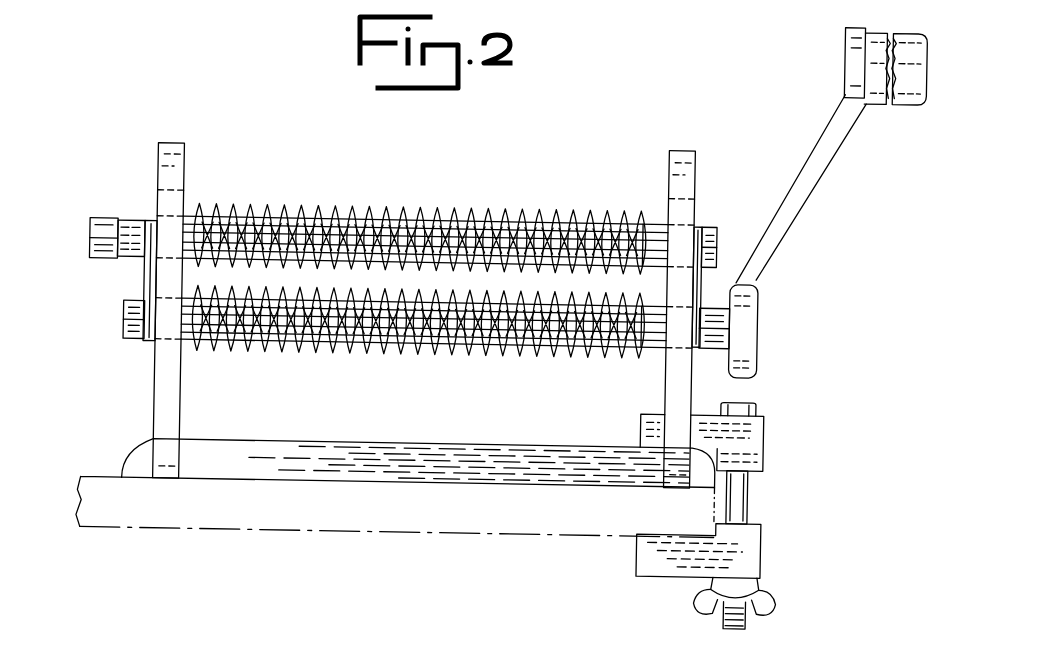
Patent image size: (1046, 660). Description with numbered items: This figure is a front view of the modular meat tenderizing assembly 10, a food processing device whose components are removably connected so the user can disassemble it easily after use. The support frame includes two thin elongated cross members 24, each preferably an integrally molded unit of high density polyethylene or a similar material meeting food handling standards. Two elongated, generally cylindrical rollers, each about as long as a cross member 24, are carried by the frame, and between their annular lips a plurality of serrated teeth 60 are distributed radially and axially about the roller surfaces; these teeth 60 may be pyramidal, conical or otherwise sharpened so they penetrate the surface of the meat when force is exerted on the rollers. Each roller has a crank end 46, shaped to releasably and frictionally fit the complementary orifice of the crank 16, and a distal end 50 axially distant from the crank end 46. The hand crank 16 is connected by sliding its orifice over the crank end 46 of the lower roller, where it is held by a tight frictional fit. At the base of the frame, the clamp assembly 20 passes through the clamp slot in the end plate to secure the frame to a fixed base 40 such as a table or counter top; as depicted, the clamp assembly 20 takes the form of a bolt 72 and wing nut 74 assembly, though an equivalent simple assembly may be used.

The modular meat tenderizing assembly 10 is at (142, 110).
The crank 16 is at (797, 190).
The clamp assembly 20 is at (773, 481).
The cross member 24 is at (286, 464).
The fixed base 40 is at (424, 513).
The crank end 46 is at (102, 240).
The distal end 50 is at (124, 335).
The serrated teeth 60 is at (286, 212).
The bolt 72 is at (757, 397).
The wing nut 74 is at (768, 591).